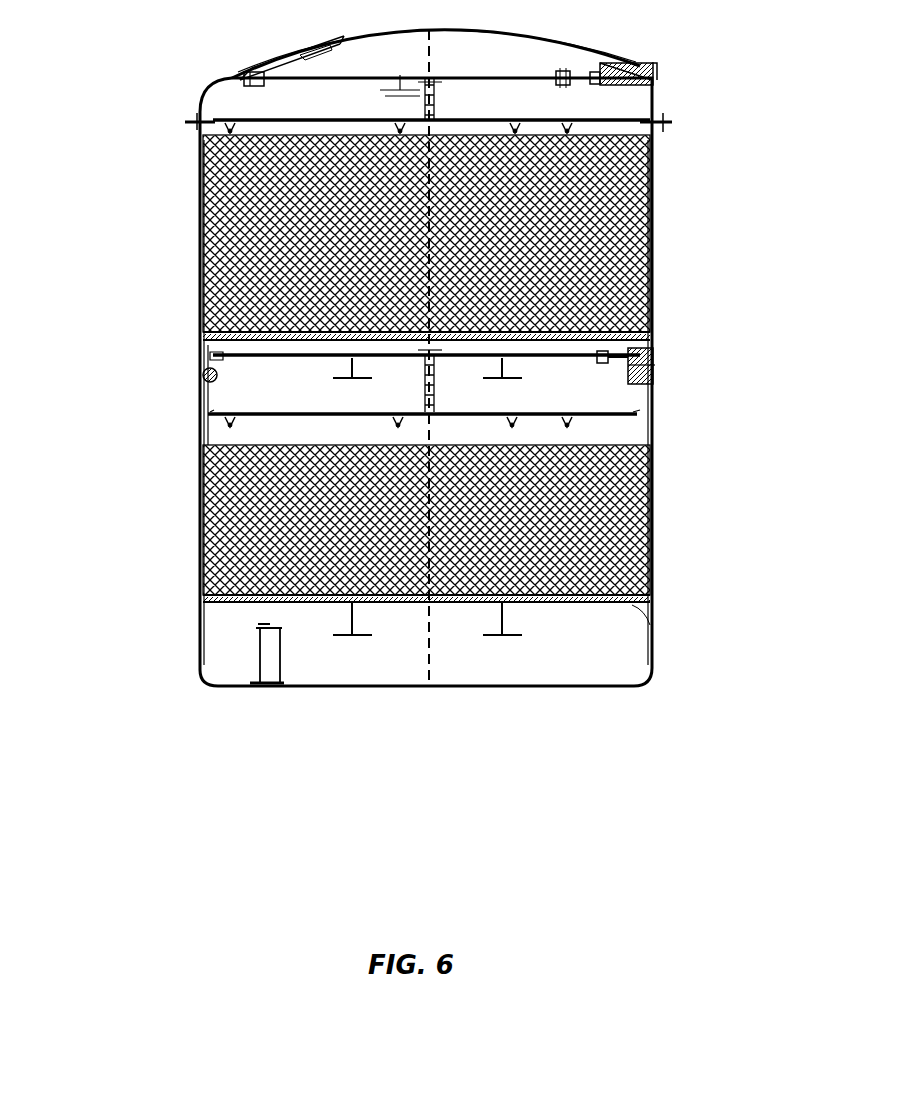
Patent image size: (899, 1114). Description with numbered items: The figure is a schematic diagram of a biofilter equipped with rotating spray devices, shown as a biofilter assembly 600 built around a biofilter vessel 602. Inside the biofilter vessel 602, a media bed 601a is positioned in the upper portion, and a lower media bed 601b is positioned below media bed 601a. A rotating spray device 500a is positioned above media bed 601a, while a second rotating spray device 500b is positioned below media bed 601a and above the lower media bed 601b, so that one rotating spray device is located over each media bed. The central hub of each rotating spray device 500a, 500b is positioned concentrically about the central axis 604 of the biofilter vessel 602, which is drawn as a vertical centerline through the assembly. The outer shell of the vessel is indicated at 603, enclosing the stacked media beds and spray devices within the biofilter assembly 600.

The biofilter assembly 600 is at (561, 726).
The biofilter vessel 602 is at (232, 80).
The vessel shell 603 is at (668, 648).
The central axis 604 is at (425, 658).
The media bed 601a is at (215, 230).
The lower media bed 601b is at (215, 518).
The rotating spray device 500a is at (432, 121).
The rotating spray device 500b is at (432, 413).